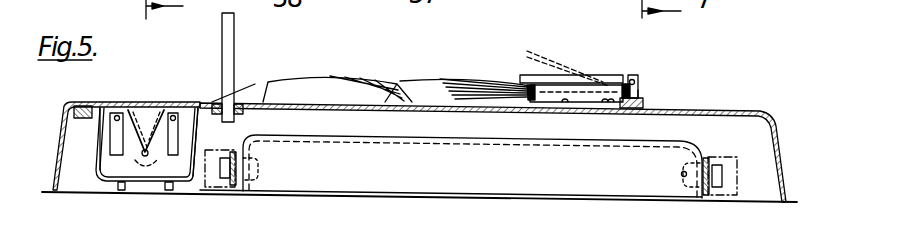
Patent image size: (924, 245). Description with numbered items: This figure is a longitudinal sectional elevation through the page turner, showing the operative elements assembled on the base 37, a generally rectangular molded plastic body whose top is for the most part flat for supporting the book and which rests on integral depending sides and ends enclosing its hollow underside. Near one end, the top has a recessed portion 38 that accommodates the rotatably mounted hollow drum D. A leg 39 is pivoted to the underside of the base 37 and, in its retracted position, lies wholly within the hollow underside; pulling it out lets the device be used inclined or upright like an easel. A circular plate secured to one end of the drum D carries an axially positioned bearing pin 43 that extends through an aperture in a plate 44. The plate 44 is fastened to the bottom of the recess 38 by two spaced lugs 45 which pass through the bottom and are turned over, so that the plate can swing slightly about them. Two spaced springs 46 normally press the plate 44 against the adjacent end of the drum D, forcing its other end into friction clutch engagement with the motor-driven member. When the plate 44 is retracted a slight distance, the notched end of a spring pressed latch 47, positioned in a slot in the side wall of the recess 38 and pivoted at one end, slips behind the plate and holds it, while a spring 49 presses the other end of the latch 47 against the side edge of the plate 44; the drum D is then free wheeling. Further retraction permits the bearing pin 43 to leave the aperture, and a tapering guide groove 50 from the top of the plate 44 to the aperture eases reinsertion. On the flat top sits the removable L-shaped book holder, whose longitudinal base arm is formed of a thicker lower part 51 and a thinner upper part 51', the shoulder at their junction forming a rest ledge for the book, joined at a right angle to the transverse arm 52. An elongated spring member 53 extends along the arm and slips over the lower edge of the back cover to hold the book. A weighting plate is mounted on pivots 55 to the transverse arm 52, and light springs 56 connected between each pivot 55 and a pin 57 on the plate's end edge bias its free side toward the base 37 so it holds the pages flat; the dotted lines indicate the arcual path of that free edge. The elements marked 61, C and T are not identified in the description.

The base 37 is at (762, 112).
The recessed portion 38 is at (107, 187).
The leg 39 is at (462, 178).
The bearing pin 43 is at (145, 156).
The plate 44 is at (172, 167).
The lugs 45 is at (125, 189).
The springs 46 is at (118, 137).
The latch 47 is at (100, 115).
The spring 49 is at (83, 107).
The guide groove 50 is at (157, 117).
The lower part of base arm 51 is at (548, 61).
The upper part of base arm 51' is at (339, 138).
The transverse arm 52 is at (645, 103).
The spring member 53 is at (572, 104).
The pivots 55 is at (636, 80).
The springs 56 is at (638, 92).
The pin 57 is at (620, 42).
The post 61 is at (234, 50).
The cassette path C is at (545, 90).
The hollow drum D is at (145, 152).
The tape T is at (250, 84).